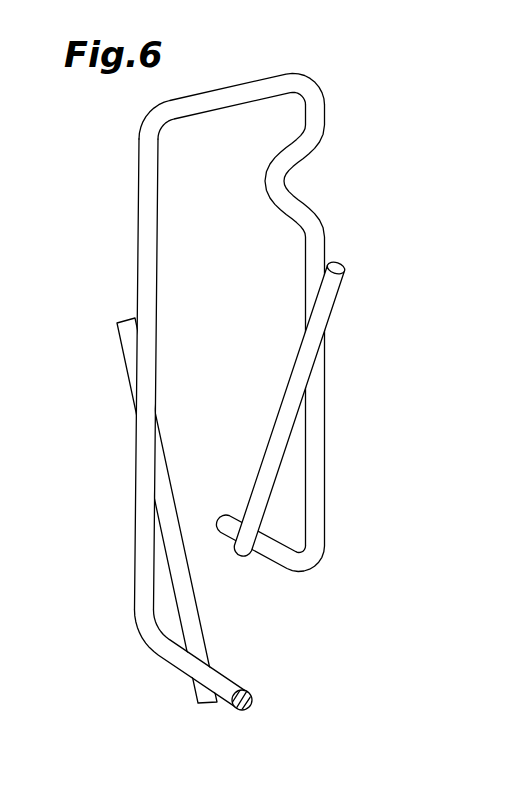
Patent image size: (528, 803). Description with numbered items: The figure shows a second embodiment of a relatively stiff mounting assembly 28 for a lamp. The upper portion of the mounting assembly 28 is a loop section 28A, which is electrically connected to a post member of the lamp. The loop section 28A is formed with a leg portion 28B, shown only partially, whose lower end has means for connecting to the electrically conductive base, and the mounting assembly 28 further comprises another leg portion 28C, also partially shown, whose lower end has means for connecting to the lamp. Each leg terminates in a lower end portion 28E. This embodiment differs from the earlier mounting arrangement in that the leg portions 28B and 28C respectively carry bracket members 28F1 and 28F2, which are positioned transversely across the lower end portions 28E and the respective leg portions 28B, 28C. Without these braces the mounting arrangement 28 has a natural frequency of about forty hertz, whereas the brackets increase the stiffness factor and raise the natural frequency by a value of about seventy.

The mounting assembly 28 is at (289, 380).
The loop section 28A is at (325, 98).
The leg portion 28B is at (322, 385).
The leg portion 28C is at (138, 232).
The lower end portion 28E is at (123, 668).
The bracket member 28F1 is at (279, 408).
The bracket member 28F2 is at (163, 458).